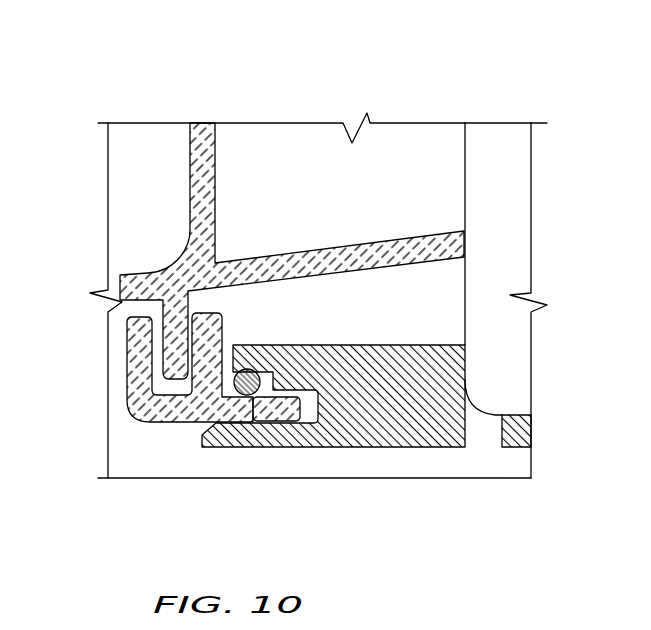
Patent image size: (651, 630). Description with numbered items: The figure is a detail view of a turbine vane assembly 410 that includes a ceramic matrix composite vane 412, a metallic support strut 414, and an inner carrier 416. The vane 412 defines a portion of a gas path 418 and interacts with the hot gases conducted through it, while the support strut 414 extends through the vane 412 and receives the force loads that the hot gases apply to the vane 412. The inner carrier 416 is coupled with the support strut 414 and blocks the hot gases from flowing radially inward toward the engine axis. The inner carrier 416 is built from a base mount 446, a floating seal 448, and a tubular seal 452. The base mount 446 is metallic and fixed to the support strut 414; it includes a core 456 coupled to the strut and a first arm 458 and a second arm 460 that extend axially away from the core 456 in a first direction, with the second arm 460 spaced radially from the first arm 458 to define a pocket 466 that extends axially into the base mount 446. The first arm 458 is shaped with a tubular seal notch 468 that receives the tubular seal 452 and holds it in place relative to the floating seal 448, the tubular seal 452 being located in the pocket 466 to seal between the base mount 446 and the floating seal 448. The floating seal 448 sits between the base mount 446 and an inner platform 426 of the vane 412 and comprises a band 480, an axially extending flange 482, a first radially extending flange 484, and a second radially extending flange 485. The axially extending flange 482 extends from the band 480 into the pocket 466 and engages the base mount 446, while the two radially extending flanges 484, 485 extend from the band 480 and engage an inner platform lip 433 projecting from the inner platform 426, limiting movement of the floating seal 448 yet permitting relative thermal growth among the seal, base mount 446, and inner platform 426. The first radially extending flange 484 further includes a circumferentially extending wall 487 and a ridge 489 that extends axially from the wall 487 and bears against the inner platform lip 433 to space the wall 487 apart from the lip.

The turbine vane assembly 410 is at (143, 83).
The ceramic matrix composite vane 412 is at (148, 136).
The metallic support strut 414 is at (478, 116).
The inner carrier 416 is at (117, 452).
The gas path 418 is at (152, 192).
The inner platform 426 is at (143, 250).
The inner platform lip 433 is at (156, 309).
The base mount 446 is at (455, 450).
The floating seal 448 is at (106, 395).
The tubular seal 452 is at (250, 410).
The core 456 is at (410, 450).
The first arm 458 is at (380, 342).
The second arm 460 is at (200, 446).
The pocket 466 is at (312, 406).
The tubular seal notch 468 is at (230, 326).
The band 480 is at (154, 425).
The axially extending flange 482 is at (277, 425).
The first radially extending flange 484 is at (212, 294).
The second radially extending flange 485 is at (122, 345).
The circumferentially extending wall 487 is at (253, 355).
The ridge 489 is at (180, 318).